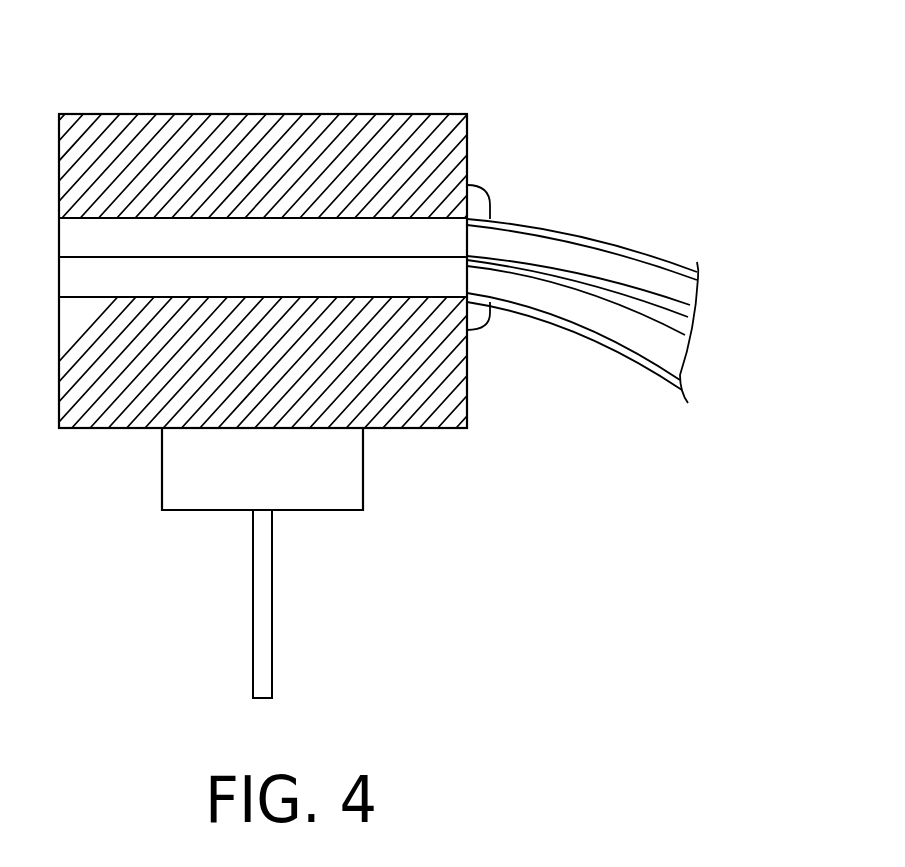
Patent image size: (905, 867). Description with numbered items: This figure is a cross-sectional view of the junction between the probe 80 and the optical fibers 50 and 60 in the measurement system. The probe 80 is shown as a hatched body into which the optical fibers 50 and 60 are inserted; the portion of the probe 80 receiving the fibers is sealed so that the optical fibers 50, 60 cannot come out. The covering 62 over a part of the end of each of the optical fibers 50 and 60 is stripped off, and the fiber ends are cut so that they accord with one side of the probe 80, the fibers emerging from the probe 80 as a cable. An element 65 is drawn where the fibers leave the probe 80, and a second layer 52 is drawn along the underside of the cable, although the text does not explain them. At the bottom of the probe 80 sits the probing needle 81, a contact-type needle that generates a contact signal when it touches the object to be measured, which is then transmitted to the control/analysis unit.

The probe 80 is at (220, 147).
The probing needle 81 is at (268, 614).
The strain relief boot 65 is at (476, 203).
The covering 62 is at (566, 232).
The optical fiber 60 is at (582, 307).
The optical fiber 50 is at (511, 284).
The lower jacket layer 52 is at (638, 356).